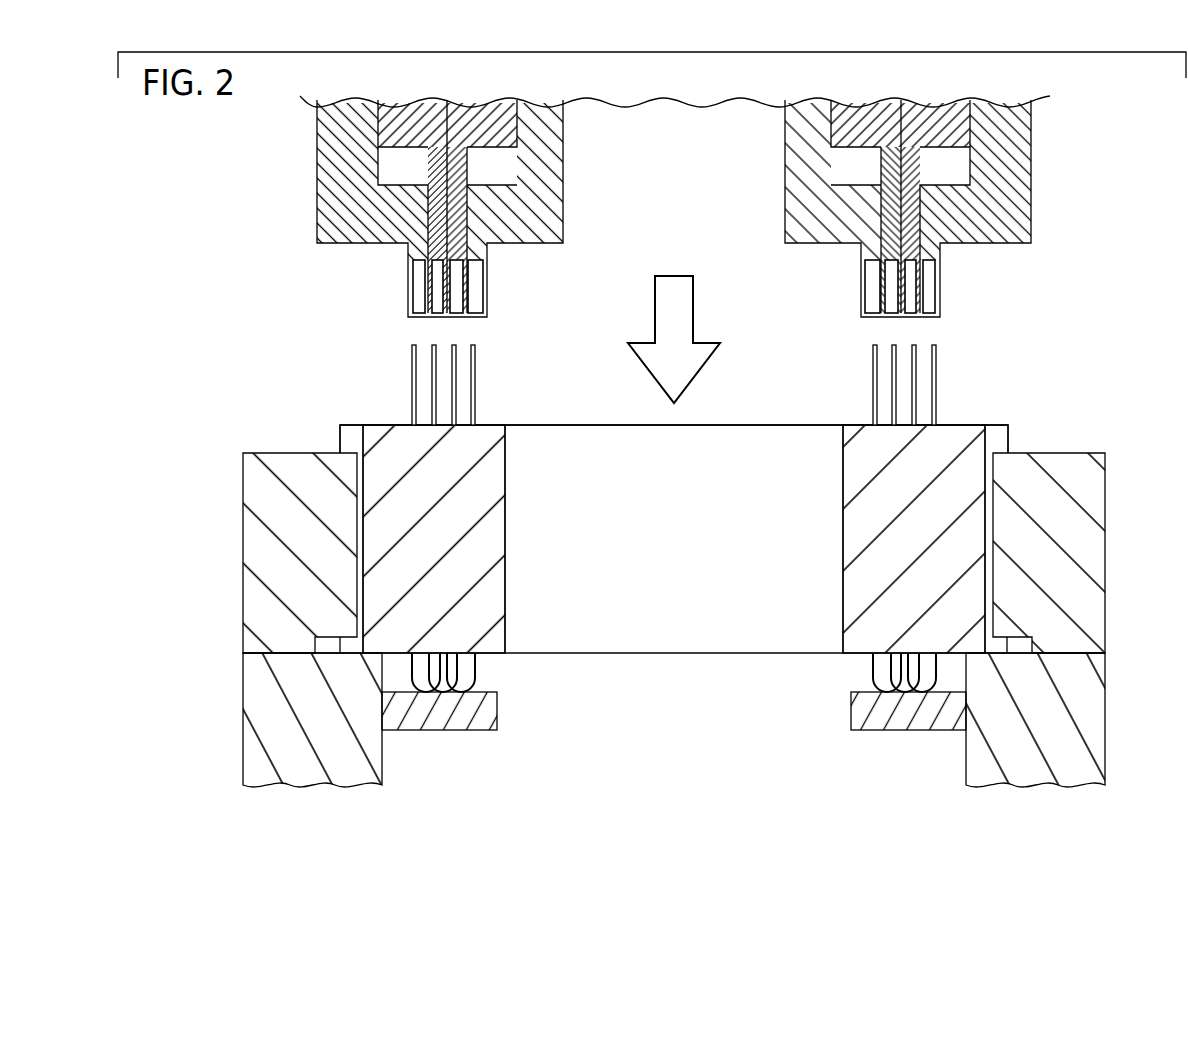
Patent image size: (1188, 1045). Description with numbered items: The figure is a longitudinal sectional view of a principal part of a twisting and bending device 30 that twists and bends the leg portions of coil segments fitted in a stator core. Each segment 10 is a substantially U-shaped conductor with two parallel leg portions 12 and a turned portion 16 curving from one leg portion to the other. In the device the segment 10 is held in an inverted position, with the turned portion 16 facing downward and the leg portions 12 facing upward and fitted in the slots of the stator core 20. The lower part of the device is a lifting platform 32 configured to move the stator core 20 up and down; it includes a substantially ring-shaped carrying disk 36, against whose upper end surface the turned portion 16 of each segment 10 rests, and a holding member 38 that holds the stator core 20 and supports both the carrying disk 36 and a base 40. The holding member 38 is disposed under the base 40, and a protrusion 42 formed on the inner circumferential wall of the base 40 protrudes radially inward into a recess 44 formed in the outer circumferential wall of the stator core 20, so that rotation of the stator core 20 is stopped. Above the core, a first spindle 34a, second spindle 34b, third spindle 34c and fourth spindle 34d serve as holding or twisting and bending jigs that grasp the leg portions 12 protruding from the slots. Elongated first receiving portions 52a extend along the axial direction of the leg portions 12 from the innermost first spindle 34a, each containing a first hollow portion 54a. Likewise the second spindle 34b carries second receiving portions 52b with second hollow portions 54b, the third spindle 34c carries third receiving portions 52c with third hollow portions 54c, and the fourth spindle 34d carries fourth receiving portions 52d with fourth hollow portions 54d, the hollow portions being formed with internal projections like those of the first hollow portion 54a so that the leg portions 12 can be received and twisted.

The segment 10 is at (938, 375).
The leg portion 12 is at (411, 366).
The turned portion 16 is at (478, 672).
The stator core 20 is at (758, 645).
The twisting and bending device 30 is at (207, 141).
The lifting platform 32 is at (1120, 698).
The first spindle 34a is at (556, 170).
The second spindle 34b is at (892, 203).
The third spindle 34c is at (912, 217).
The fourth spindle 34d is at (338, 165).
The carrying disk 36 is at (460, 720).
The holding member 38 is at (1035, 772).
The base 40 is at (1094, 493).
The protrusion 42 is at (1002, 512).
The recess 44 is at (1010, 438).
The first receiving portion 52a is at (866, 297).
The second receiving portion 52b is at (892, 275).
The third receiving portion 52c is at (908, 290).
The fourth receiving portion 52d is at (932, 275).
The first hollow portion 54a is at (472, 300).
The second hollow portion 54b is at (458, 275).
The third hollow portion 54c is at (440, 294).
The fourth hollow portion 54d is at (420, 275).